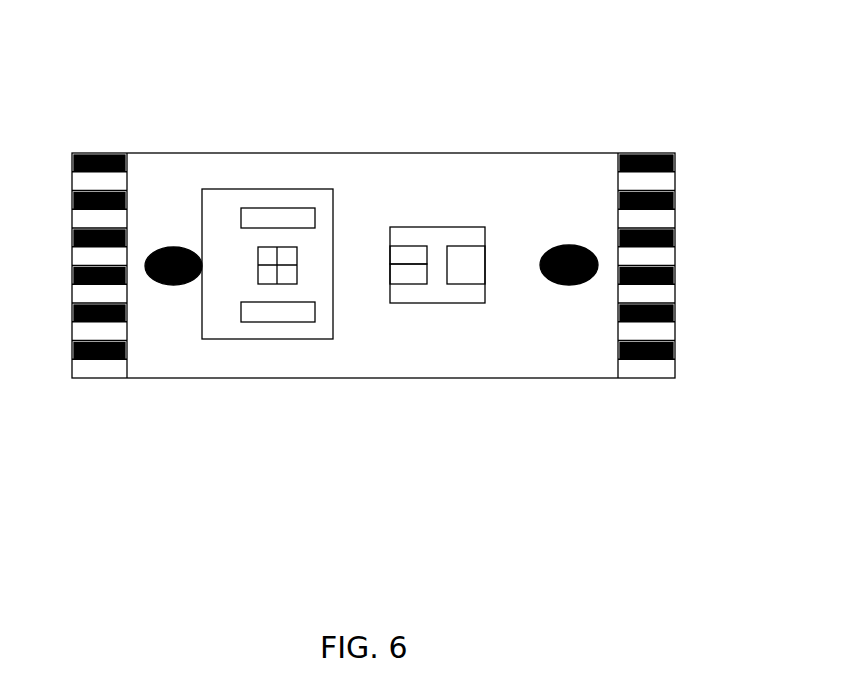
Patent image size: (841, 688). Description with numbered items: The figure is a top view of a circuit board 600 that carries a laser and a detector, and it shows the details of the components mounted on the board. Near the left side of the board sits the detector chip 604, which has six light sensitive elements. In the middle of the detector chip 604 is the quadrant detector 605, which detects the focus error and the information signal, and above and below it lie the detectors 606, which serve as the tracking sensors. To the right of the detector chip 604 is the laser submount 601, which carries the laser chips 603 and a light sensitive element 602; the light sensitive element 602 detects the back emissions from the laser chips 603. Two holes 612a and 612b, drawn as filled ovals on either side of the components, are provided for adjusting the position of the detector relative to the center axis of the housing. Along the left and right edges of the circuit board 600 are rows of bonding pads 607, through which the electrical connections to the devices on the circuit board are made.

The substrate / circuit board 600 is at (580, 340).
The laser submount 601 is at (450, 226).
The light sensitive element 602 is at (467, 267).
The laser chips 603 is at (411, 286).
The detector chip 604 is at (220, 286).
The quadrant detector 605 is at (277, 243).
The detectors 606 is at (315, 230).
The edge contacts 607 is at (88, 188).
The hole 612a is at (164, 245).
The hole 612b is at (580, 242).